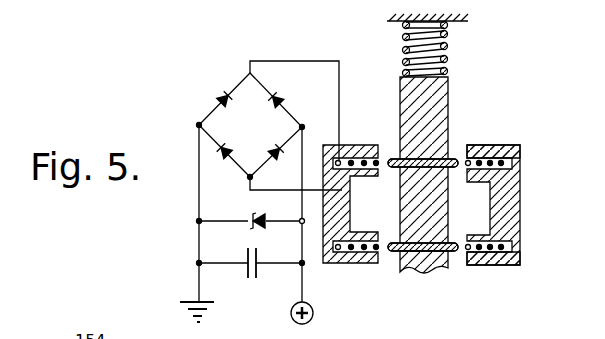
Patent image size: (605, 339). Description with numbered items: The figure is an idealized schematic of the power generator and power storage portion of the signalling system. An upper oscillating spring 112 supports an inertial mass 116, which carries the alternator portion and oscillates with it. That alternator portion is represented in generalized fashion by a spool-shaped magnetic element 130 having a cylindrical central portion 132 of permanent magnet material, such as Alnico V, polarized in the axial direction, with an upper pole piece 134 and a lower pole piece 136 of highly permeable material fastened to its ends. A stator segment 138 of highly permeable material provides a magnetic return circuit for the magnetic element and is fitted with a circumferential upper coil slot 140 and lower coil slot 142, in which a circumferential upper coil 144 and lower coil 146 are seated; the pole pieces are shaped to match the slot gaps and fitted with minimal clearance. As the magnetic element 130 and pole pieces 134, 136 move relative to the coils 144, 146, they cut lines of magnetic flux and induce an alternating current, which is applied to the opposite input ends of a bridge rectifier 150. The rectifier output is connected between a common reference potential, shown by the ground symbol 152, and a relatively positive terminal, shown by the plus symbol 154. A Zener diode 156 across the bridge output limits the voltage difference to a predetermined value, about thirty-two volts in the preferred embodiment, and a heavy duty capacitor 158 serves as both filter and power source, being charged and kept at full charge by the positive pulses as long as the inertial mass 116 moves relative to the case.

The upper oscillating spring 112 is at (402, 39).
The inertial mass 116 is at (443, 97).
The spool-shaped magnetic element 130 is at (391, 134).
The cylindrical central portion 132 is at (455, 250).
The upper pole piece 134 is at (457, 160).
The lower pole piece 136 is at (446, 240).
The stator segment 138 is at (517, 204).
The upper coil slot 140 is at (500, 177).
The lower coil slot 142 is at (508, 247).
The upper circumferential coil 144 is at (515, 152).
The lower circumferential coil 146 is at (510, 255).
The bridge rectifier 150 is at (237, 83).
The ground symbol 152 is at (189, 302).
The plus symbol 154 is at (313, 313).
The Zener diode 156 is at (252, 212).
The heavy duty capacitor 158 is at (260, 274).